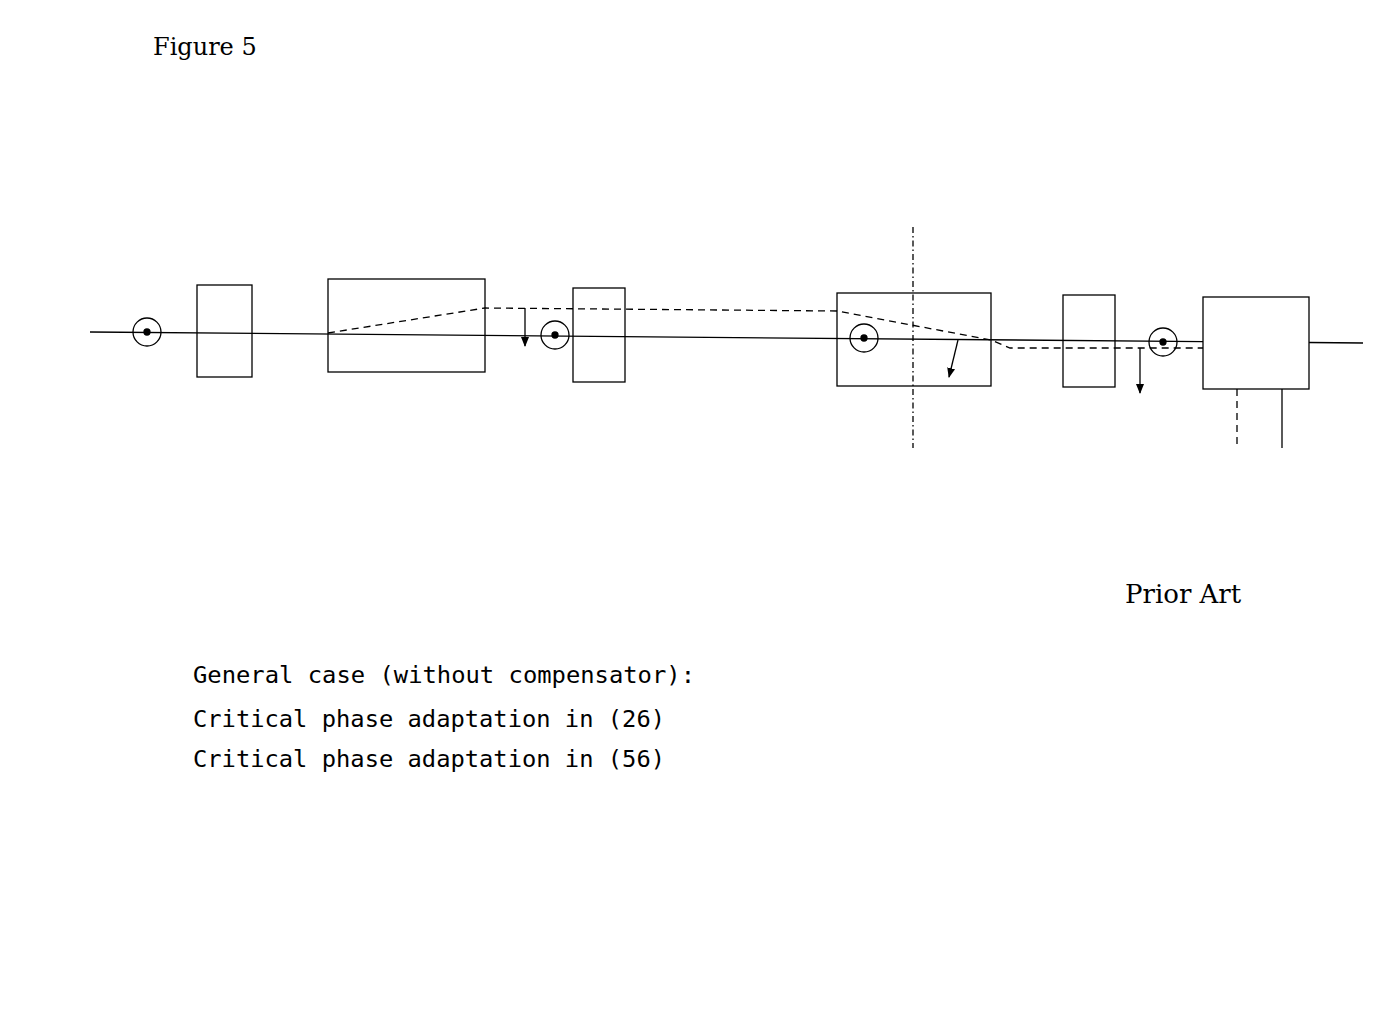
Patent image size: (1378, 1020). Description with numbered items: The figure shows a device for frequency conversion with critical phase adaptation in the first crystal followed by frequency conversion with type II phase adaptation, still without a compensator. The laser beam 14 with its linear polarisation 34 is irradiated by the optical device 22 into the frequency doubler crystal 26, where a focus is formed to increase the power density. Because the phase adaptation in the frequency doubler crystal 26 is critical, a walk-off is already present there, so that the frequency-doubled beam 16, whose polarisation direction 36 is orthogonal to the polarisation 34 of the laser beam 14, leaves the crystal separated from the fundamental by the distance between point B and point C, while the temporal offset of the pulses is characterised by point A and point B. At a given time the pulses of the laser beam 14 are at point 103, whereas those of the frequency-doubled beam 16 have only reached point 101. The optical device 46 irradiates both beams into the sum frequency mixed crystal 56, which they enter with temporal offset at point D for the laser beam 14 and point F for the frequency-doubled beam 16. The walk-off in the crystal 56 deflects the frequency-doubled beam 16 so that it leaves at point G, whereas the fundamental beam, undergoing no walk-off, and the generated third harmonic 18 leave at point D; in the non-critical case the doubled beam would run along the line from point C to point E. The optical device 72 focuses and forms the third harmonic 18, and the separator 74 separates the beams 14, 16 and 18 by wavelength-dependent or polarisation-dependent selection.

The laser beam 14 is at (107, 327).
The frequency-doubled beam 16 is at (499, 307).
The third harmonic 18 is at (1045, 337).
The optical device 22 is at (224, 309).
The frequency doubler crystal 26 is at (406, 307).
The linear polarisation 34 is at (165, 318).
The polarisation direction 36 is at (522, 357).
The optical device 46 is at (599, 319).
The sum frequency mixed crystal 56 is at (914, 337).
The optical device 72 is at (1120, 321).
The separator 74 is at (1256, 321).
The point 101 is at (520, 304).
The point 103 is at (555, 335).
The point A is at (326, 332).
The point B is at (482, 337).
The point C is at (482, 301).
The point D is at (833, 338).
The point E is at (991, 338).
The point F is at (837, 312).
The point G is at (991, 343).